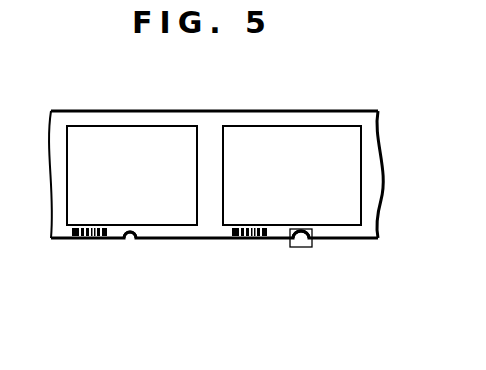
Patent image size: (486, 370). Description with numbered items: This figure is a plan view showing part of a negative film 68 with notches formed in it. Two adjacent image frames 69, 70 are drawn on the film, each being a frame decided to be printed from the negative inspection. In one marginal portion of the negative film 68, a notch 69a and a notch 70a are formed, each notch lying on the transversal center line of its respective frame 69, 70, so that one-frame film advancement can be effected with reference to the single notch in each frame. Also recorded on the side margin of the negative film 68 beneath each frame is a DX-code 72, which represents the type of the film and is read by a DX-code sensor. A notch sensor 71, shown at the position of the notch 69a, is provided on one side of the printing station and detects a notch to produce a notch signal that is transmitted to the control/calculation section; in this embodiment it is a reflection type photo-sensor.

The negative film 68 is at (370, 168).
The frame 69 is at (293, 138).
The notch 69a is at (303, 247).
The frame 70 is at (133, 137).
The notch 70a is at (131, 241).
The notch sensor 71 is at (297, 248).
The DX-code 72 is at (76, 237).